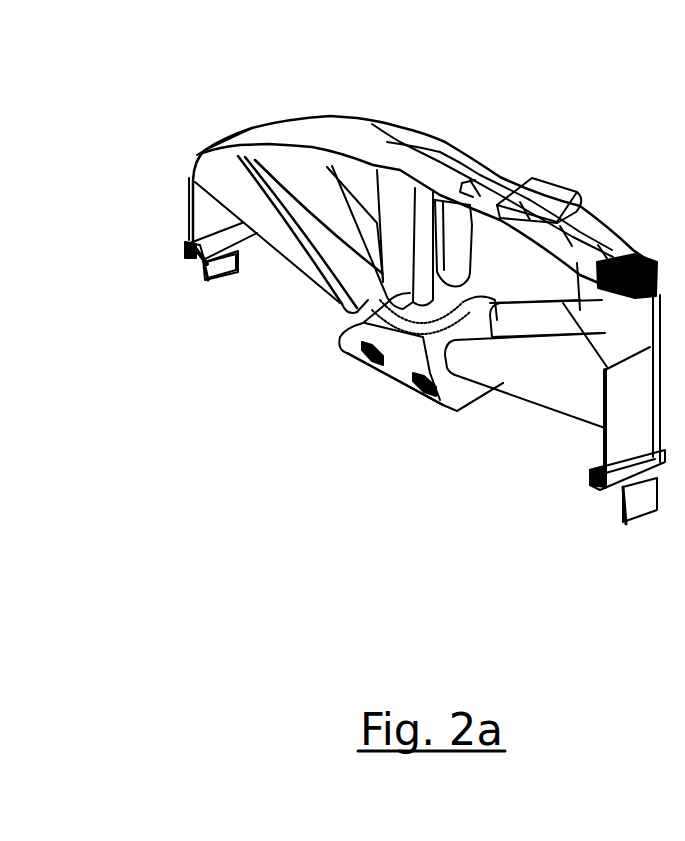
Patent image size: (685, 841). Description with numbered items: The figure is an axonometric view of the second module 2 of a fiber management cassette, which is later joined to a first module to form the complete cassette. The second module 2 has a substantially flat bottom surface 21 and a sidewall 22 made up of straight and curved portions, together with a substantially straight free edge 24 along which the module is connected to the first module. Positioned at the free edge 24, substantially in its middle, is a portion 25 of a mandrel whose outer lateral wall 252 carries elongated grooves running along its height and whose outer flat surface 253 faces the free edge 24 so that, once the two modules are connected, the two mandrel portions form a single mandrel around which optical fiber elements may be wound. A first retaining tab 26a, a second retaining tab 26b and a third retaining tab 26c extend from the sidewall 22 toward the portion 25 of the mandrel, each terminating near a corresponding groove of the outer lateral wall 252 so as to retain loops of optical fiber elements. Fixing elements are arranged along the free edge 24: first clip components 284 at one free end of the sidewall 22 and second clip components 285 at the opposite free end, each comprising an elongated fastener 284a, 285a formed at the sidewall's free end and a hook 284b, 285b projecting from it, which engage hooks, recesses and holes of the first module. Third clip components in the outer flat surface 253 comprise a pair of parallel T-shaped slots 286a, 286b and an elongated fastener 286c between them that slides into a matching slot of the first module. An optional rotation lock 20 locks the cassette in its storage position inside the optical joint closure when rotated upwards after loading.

The second module 2 is at (220, 104).
The sidewall 22 is at (300, 132).
The third retaining tab 26c is at (395, 198).
The rotation lock 20 is at (552, 165).
The bottom surface 21 is at (511, 290).
The outer lateral wall 252 is at (458, 337).
The first clip components 284 is at (165, 265).
The elongated fastener 284a is at (194, 264).
The hook 284b is at (207, 280).
The first retaining tab 26a is at (300, 258).
The portion of a mandrel 25 is at (330, 360).
The elongated slot 286a is at (366, 349).
The elongated slot 286b is at (421, 382).
The elongated fastener 286c is at (393, 378).
The outer flat surface 253 is at (440, 408).
The second retaining tab 26b is at (527, 373).
The free edge 24 is at (568, 423).
The second clip components 285 is at (605, 536).
The elongated fastener 285a is at (603, 484).
The hook 285b is at (631, 520).